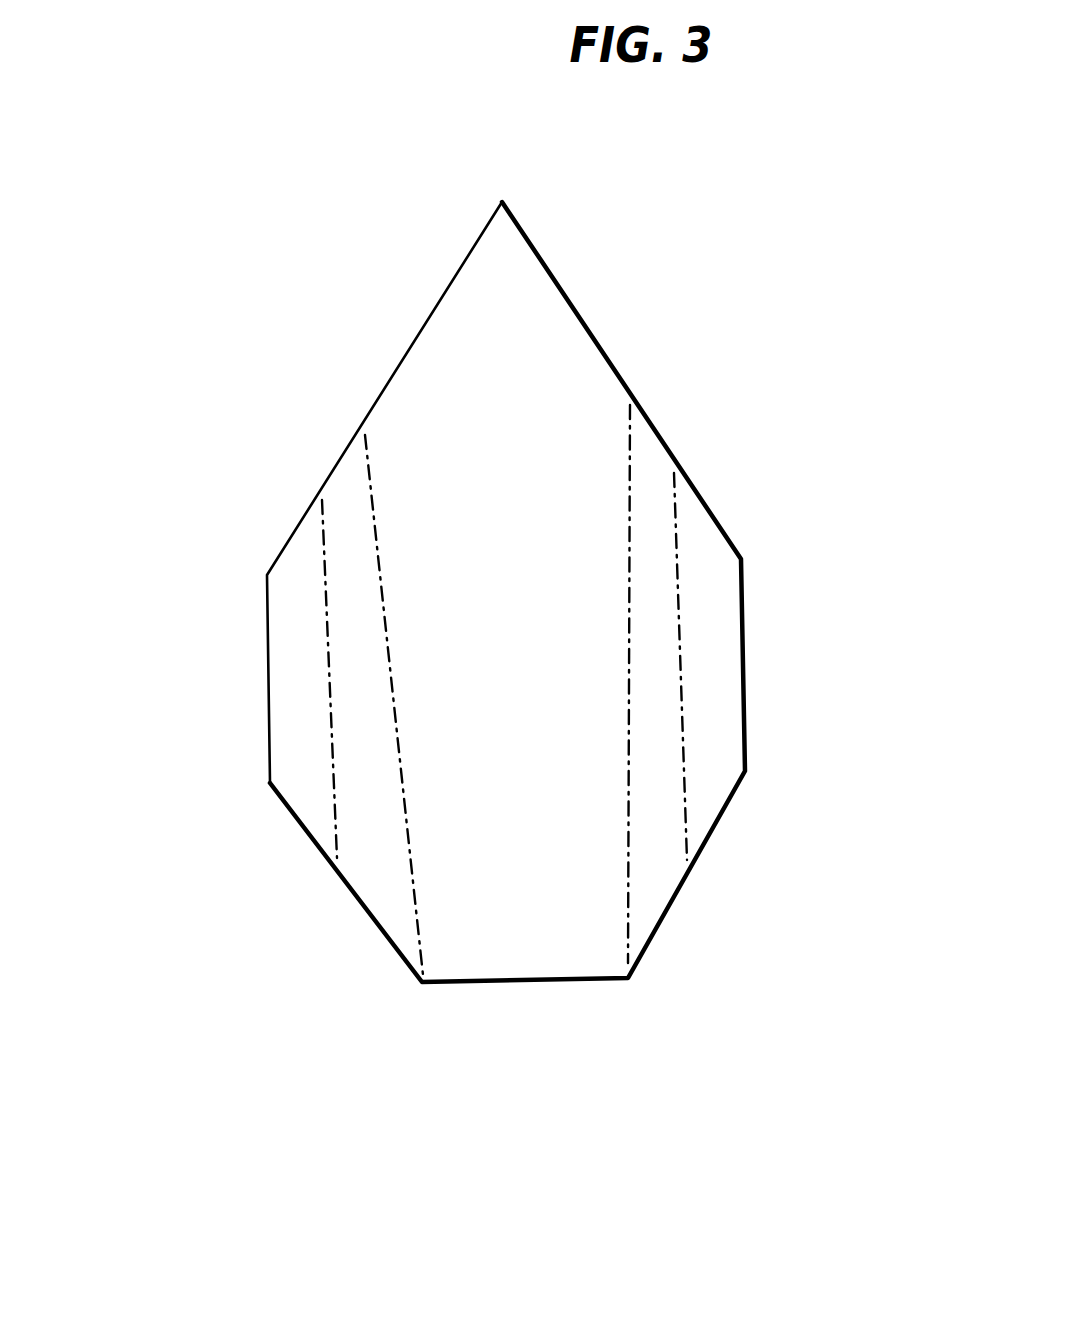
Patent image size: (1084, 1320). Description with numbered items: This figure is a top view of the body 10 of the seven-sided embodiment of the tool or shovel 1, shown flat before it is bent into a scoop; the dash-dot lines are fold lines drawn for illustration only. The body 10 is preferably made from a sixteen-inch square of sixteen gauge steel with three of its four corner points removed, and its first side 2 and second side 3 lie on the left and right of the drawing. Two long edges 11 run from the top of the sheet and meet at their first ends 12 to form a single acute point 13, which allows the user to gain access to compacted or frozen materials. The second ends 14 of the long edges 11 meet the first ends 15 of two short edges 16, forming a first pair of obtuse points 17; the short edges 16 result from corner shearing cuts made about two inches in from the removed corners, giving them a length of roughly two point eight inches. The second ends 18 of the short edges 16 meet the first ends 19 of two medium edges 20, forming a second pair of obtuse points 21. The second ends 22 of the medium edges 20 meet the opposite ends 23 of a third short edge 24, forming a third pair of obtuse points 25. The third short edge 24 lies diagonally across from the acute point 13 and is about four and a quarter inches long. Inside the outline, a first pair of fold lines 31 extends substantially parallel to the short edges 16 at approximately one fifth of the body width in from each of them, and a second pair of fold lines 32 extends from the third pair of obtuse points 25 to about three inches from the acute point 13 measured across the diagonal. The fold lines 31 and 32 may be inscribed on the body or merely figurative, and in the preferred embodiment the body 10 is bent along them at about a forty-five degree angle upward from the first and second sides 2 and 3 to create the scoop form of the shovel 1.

The shovel 1 is at (722, 232).
The first side 2 is at (242, 388).
The second side 3 is at (800, 443).
The main body 10 is at (805, 657).
The long edges 11 is at (400, 363).
The first ends of the long edges 12 is at (413, 238).
The single acute point 13 is at (502, 202).
The second ends of the long edges 14 is at (273, 505).
The first ends of the short edges 15 is at (215, 592).
The short edges 16 is at (270, 677).
The first pair of obtuse points 17 is at (265, 575).
The second ends of the short edges 18 is at (237, 758).
The first ends of the medium edges 19 is at (282, 810).
The medium edges 20 is at (313, 833).
The second pair of obtuse points 21 is at (273, 786).
The second ends of the medium edges 22 is at (348, 1020).
The opposite ends of the third short edge 23 is at (435, 1020).
The third short edge 24 is at (510, 983).
The third pair of obtuse points 25 is at (420, 983).
The first pair of fold lines 31 is at (330, 857).
The second pair of fold lines 32 is at (418, 907).